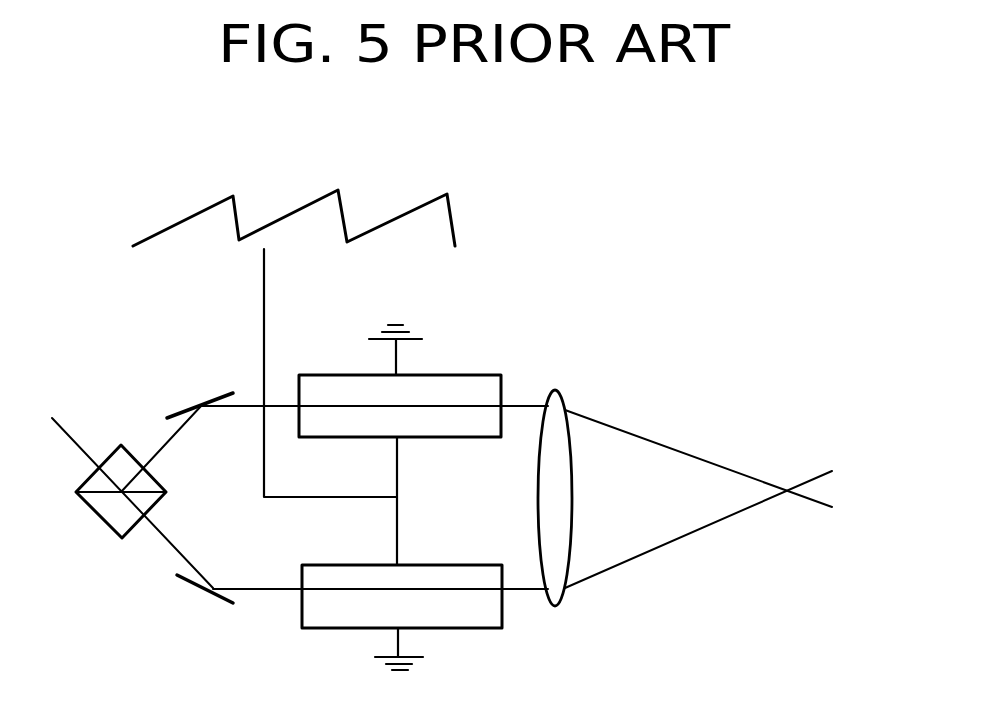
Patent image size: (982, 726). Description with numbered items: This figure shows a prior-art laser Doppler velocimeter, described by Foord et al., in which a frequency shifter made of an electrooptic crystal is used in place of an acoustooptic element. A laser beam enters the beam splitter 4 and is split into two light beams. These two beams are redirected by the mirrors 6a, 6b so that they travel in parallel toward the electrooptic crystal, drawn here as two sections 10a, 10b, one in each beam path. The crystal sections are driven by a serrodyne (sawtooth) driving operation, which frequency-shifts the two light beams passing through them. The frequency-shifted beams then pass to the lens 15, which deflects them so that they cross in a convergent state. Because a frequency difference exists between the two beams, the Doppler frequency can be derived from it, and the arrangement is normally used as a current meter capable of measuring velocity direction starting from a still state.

The beam splitter 4 is at (112, 517).
The mirror 6a is at (218, 397).
The mirror 6b is at (227, 600).
The electrooptic crystal 10a is at (478, 385).
The electrooptic crystal 10b is at (485, 617).
The lens 15 is at (556, 403).